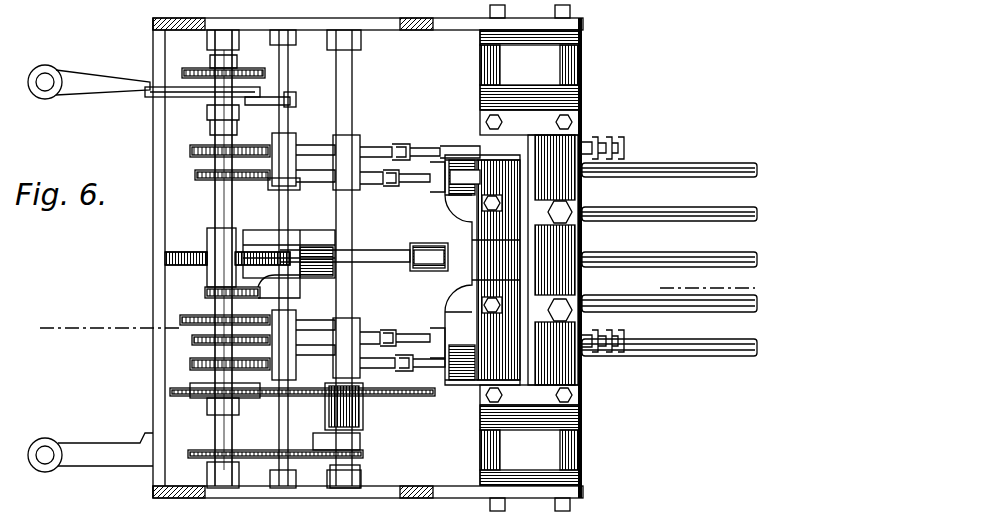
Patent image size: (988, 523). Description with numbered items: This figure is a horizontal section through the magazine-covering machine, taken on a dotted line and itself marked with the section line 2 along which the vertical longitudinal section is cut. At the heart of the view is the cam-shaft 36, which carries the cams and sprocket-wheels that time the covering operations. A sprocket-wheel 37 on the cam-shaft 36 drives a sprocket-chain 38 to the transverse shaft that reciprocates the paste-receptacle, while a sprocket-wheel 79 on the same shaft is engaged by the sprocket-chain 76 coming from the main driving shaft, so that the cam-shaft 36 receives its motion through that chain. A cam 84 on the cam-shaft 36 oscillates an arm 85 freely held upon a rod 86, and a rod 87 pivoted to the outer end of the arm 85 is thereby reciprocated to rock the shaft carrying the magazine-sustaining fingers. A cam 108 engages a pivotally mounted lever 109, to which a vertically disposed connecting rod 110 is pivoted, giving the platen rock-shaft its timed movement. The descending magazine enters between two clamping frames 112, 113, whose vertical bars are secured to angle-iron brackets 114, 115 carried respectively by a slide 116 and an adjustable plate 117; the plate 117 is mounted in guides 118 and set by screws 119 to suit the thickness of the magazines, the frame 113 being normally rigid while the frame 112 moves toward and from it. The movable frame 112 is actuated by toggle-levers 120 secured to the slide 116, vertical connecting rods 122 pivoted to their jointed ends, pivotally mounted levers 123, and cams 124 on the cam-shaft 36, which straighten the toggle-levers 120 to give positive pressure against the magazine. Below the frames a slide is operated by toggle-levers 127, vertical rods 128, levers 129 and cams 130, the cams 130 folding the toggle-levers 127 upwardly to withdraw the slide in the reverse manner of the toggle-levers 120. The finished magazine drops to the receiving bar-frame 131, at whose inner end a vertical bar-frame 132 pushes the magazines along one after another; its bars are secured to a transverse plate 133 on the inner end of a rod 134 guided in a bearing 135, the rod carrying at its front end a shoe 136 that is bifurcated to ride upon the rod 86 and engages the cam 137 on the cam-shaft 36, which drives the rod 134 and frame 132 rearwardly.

The section line 2— 2 is at (395, 301).
The cam-shaft 36 is at (215, 202).
The sprocket-wheel 37 is at (200, 458).
The sprocket-chain 38 is at (278, 456).
The sprocket-chain 76 is at (428, 396).
The sprocket-wheel 79 is at (185, 392).
The cam 84 is at (222, 100).
The arm 85 is at (292, 92).
The rod 86 is at (288, 120).
The rod 87 is at (168, 85).
The cam 108 is at (220, 311).
The lever 109 is at (305, 318).
The connecting rod 110 is at (380, 340).
The clamping frame 112 is at (482, 304).
The clamping frame 113 is at (582, 200).
The angle-iron bracket 114 is at (482, 298).
The angle-iron bracket 115 is at (582, 250).
The slide 116 is at (470, 384).
The adjustable plate 117 is at (582, 276).
The guides 118 is at (582, 120).
The screws 119 is at (608, 140).
The toggle-levers 120 is at (392, 152).
The connecting rods 122 is at (405, 148).
The levers 123 is at (285, 150).
The cams 124 is at (190, 152).
The toggle-levers 127 is at (405, 184).
The vertical rods 128 is at (385, 186).
The levers 129 is at (318, 180).
The cams 130 is at (195, 175).
The receiving bar-frame 131 is at (669, 259).
The vertical bar-frame 132 is at (455, 208).
The transverse plate 133 is at (465, 177).
The rod 134 is at (398, 250).
The bearing 135 is at (429, 257).
The shoe 136 is at (289, 254).
The cam 137 is at (205, 292).